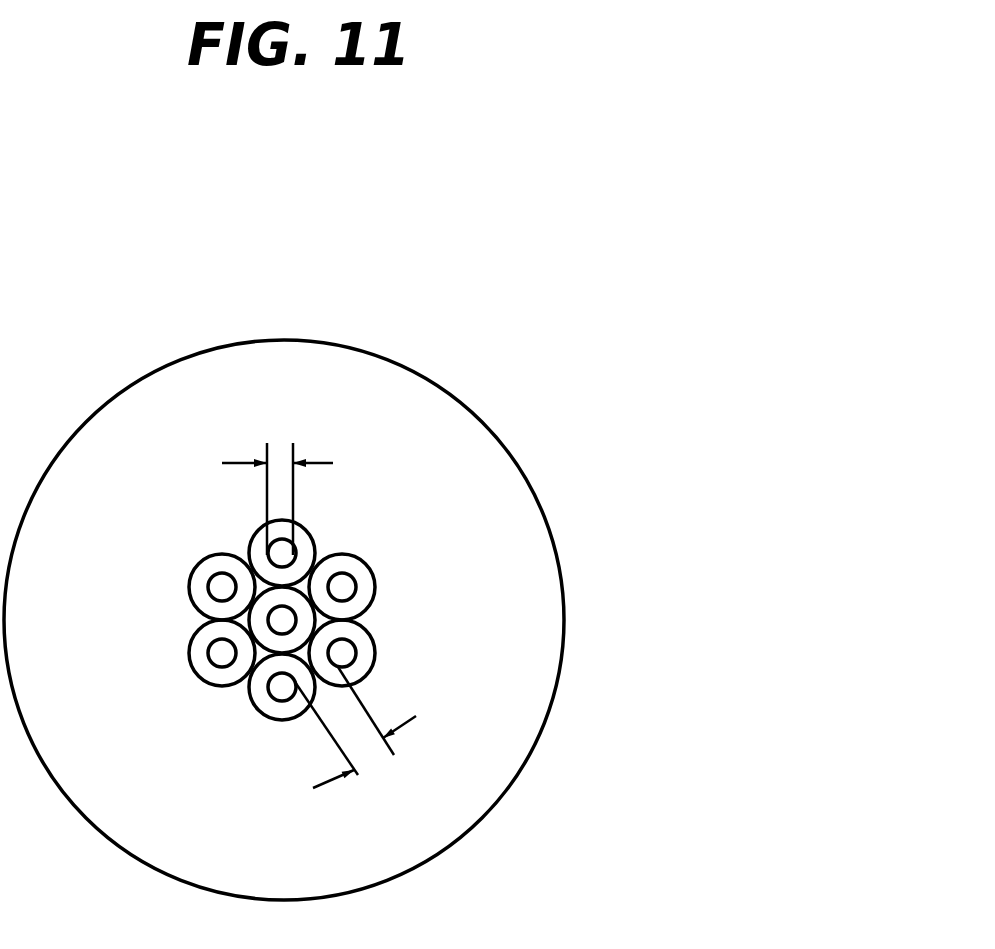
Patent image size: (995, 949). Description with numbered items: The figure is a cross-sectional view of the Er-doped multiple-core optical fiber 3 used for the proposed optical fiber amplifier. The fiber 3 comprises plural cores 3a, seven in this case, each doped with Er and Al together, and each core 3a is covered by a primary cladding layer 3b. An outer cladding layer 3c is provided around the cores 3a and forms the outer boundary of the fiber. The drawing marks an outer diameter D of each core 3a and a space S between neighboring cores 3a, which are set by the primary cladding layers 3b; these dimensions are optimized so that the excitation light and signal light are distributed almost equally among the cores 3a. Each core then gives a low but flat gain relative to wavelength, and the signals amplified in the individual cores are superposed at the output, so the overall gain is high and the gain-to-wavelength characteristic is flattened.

The Er-doped multiple-core optical fiber 3 is at (283, 341).
The core 3a is at (343, 582).
The primary cladding layer 3b is at (375, 585).
The outer cladding layer 3c is at (508, 708).